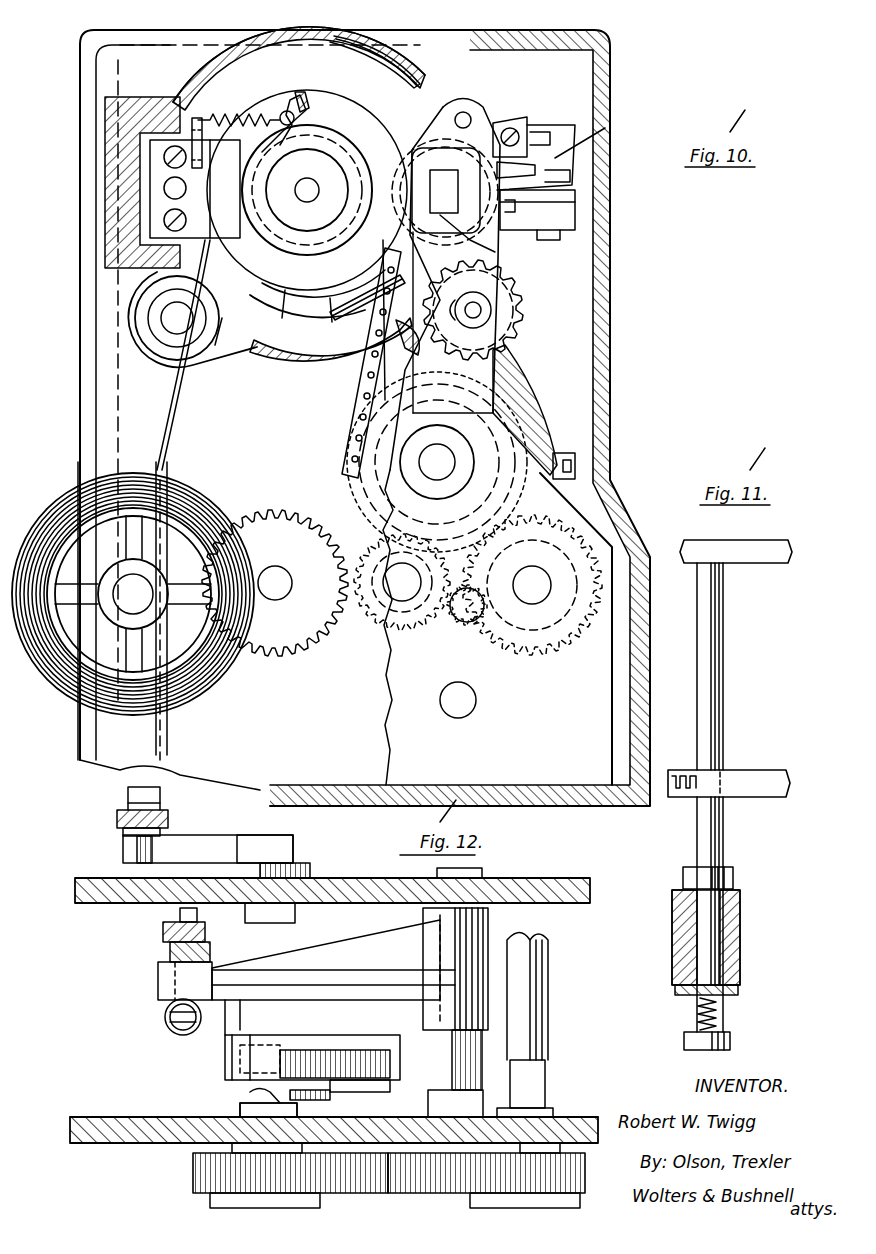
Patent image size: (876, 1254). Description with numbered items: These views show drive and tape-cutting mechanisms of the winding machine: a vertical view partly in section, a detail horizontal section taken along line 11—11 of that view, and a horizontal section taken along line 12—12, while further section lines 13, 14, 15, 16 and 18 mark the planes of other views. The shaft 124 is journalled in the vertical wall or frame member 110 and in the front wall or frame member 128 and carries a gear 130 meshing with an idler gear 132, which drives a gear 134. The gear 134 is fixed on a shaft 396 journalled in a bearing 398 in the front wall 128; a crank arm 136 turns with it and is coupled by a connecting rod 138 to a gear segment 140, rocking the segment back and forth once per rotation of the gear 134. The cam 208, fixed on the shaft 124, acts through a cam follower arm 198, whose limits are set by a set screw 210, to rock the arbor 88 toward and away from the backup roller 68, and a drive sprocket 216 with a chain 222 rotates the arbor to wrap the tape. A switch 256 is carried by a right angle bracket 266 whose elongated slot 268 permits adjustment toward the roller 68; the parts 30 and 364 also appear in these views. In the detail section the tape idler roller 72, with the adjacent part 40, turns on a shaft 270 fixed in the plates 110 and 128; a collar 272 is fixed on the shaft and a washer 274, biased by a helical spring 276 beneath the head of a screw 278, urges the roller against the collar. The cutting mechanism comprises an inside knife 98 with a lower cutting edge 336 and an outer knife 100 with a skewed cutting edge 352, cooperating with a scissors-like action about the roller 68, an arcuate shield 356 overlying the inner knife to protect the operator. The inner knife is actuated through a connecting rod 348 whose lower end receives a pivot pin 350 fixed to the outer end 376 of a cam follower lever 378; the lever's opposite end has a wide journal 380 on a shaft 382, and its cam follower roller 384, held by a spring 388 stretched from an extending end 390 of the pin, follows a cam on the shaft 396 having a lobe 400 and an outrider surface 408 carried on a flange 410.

In FIG. 10, the section line 11 is at (122, 330).
In FIG. 10, the section line 12 is at (258, 498).
In FIG. 10, the section line 13 is at (580, 558).
In FIG. 10, the section line 14 is at (398, 22).
In FIG. 10, the section line 15 is at (71, 88).
In FIG. 10, the section line 16 is at (278, 58).
In FIG. 10, the section line 18 is at (448, 78).
In FIG. 10, the solenoid 30 is at (470, 125).
In FIG. 11, the block 40 is at (742, 940).
In FIG. 10, the backup roller 68 is at (270, 100).
In FIG. 11, the tape idler roller 72 is at (745, 890).
In FIG. 10, the arbor 88 is at (481, 238).
In FIG. 10, the inside knife 98 is at (325, 82).
In FIG. 10, the outer knife 100 is at (345, 300).
In FIG. 11, the vertical wall or frame member 110 is at (780, 560).
In FIG. 12, the vertical wall or frame member 110 is at (562, 880).
In FIG. 12, the shaft 124 is at (553, 983).
In FIG. 11, the front wall or frame member 128 is at (760, 772).
In FIG. 12, the front wall or frame member 128 is at (588, 1116).
In FIG. 12, the gear 130 is at (558, 1120).
In FIG. 10, the idler gear 132 is at (355, 640).
In FIG. 12, the idler gear 132 is at (325, 1200).
In FIG. 10, the gear 134 is at (282, 640).
In FIG. 12, the gear 134 is at (200, 1175).
In FIG. 12, the crank arm 136 is at (172, 842).
In FIG. 12, the connecting rod 138 is at (117, 820).
In FIG. 12, the gear segment 140 is at (242, 840).
In FIG. 10, the cam follower arm 198 is at (520, 400).
In FIG. 10, the cam 208 is at (565, 650).
In FIG. 10, the set screw 210 is at (575, 465).
In FIG. 10, the drive sprocket 216 is at (355, 440).
In FIG. 10, the chain 222 is at (370, 380).
In FIG. 10, the switch 256 is at (578, 200).
In FIG. 10, the right angle bracket 266 is at (577, 145).
In FIG. 10, the elongated slot 268 is at (540, 130).
In FIG. 11, the shaft 270 is at (723, 815).
In FIG. 11, the collar 272 is at (737, 868).
In FIG. 11, the washer 274 is at (740, 993).
In FIG. 11, the helical spring 276 is at (697, 1008).
In FIG. 11, the screw 278 is at (735, 1035).
In FIG. 10, the lower cutting edge 336 is at (440, 84).
In FIG. 12, the connecting rod 348 is at (163, 932).
In FIG. 12, the pivot pin 350 is at (177, 913).
In FIG. 10, the cutting edge 352 is at (312, 190).
In FIG. 10, the shield 356 is at (302, 296).
In FIG. 12, the spacer 364 is at (170, 952).
In FIG. 12, the outer end 376 is at (158, 980).
In FIG. 12, the cam follower lever 378 is at (333, 945).
In FIG. 12, the journal 380 is at (470, 925).
In FIG. 12, the shaft 382 is at (470, 1070).
In FIG. 12, the cam follower roller 384 is at (218, 1055).
In FIG. 12, the spring 388 is at (165, 1017).
In FIG. 12, the extending end 390 is at (176, 1033).
In FIG. 12, the shaft 396 is at (275, 1100).
In FIG. 12, the bearing 398 is at (240, 1110).
In FIG. 12, the lobe 400 is at (340, 1040).
In FIG. 12, the outrider or controlling surface 408 is at (372, 1070).
In FIG. 12, the flange 410 is at (341, 1102).